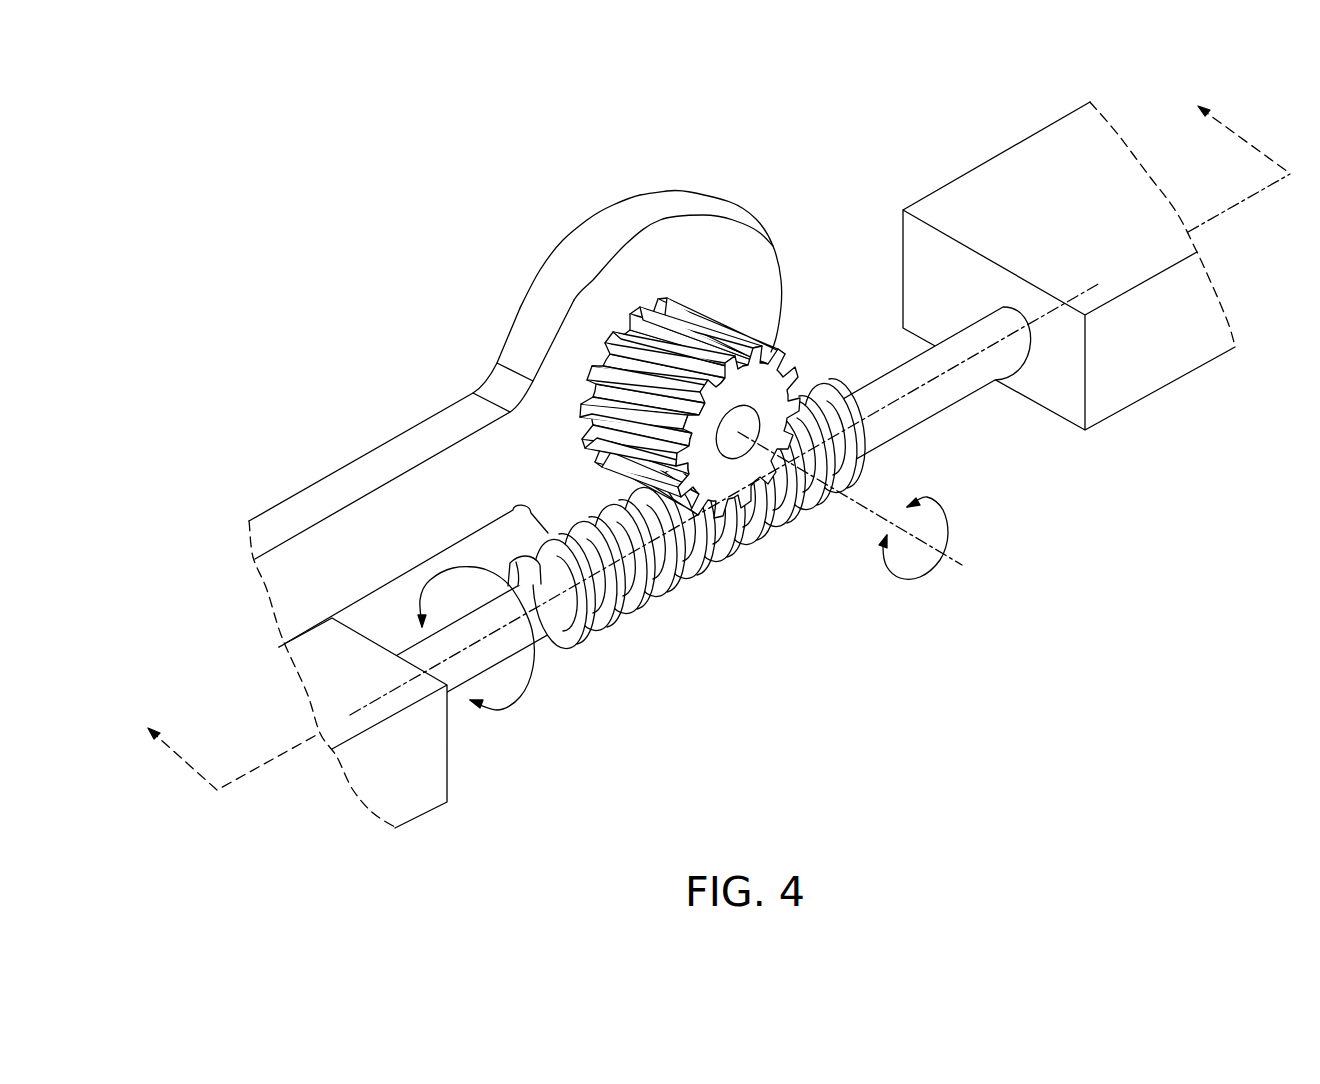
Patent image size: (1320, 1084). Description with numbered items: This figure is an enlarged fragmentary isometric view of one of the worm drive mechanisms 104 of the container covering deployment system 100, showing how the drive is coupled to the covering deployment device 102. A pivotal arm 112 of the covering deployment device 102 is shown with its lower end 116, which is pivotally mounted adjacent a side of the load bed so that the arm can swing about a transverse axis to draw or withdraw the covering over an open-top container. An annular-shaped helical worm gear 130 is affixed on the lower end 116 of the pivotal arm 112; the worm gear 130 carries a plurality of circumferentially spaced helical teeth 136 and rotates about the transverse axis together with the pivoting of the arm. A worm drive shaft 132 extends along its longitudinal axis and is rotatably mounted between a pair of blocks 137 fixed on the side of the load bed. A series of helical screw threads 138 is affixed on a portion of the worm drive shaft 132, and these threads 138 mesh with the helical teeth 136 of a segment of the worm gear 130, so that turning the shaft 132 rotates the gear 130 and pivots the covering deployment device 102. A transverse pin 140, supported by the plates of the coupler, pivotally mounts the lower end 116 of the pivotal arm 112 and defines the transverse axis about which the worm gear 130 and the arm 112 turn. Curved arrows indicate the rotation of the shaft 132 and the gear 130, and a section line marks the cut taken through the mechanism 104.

The container covering deployment system 100 is at (712, 478).
The covering deployment device 102 is at (515, 387).
The worm drive mechanism 104 is at (597, 700).
The pivotal arm 112 is at (373, 462).
The lower end 116 is at (677, 192).
The annular-shaped helical worm gear 130 is at (771, 409).
The worm drive shaft 132 is at (910, 420).
The helical teeth 136 is at (627, 335).
The block 137 is at (1152, 378).
The helical screw threads 138 is at (632, 602).
The transverse pin 140 is at (740, 440).